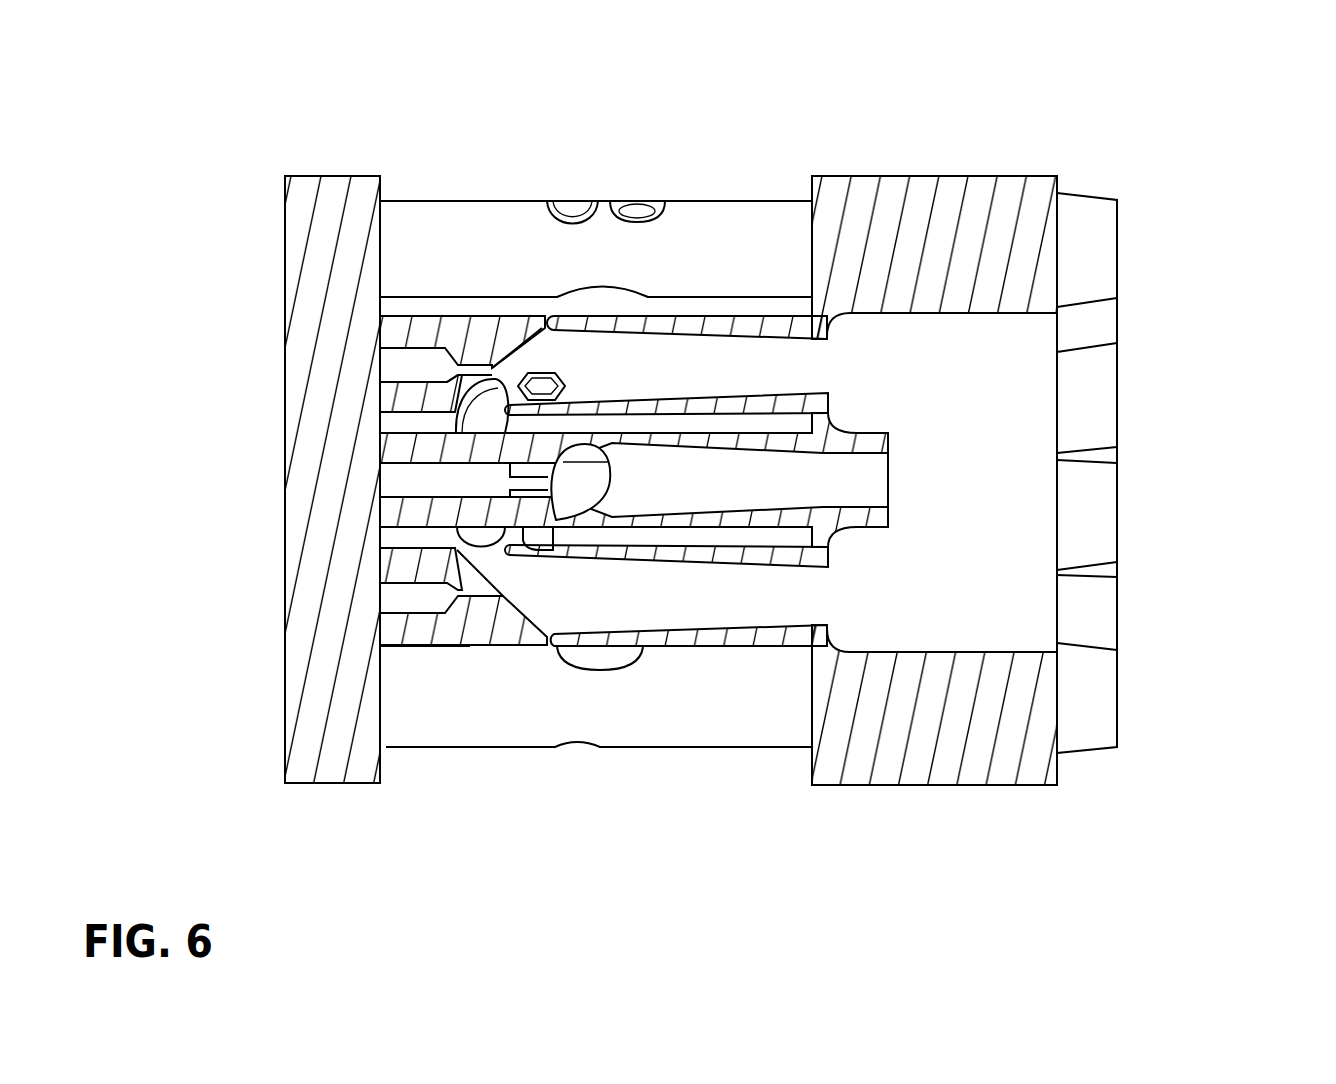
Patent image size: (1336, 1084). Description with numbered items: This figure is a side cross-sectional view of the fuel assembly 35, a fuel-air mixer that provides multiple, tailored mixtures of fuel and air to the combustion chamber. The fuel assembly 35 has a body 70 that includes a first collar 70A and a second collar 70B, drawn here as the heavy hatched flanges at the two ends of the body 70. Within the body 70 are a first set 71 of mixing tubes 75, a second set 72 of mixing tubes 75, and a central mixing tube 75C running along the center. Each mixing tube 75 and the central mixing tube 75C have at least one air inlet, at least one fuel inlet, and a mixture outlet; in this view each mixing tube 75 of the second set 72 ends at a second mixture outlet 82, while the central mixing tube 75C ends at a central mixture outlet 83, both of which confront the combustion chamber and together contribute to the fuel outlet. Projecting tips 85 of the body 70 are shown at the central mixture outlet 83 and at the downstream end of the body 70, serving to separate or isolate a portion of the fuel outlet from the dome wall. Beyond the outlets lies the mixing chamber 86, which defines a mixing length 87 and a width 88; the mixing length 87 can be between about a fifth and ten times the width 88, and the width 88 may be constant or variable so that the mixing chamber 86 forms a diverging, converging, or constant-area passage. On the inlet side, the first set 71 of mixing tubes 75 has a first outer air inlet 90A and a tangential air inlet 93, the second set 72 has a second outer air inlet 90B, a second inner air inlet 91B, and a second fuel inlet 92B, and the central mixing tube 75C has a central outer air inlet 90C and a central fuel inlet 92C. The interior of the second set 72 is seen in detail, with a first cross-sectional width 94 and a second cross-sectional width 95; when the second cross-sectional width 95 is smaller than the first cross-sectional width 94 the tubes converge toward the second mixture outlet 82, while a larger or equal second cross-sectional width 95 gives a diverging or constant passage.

The fuel assembly 35 is at (280, 117).
The body 70 is at (283, 205).
The first collar 70A is at (973, 190).
The second collar 70B is at (350, 190).
The first set of mixing tubes 71 is at (740, 715).
The second set of mixing tubes 72 is at (595, 598).
The mixing tube 75 is at (505, 700).
The central mixing tube 75C is at (772, 470).
The second mixture outlet 82 is at (821, 374).
The central mixture outlet 83 is at (888, 468).
The projecting tip 85 is at (862, 523).
The mixing chamber 86 is at (948, 368).
The mixing length 87 is at (835, 630).
The width 88 is at (1123, 313).
The first outer air inlet 90A is at (572, 213).
The second outer air inlet 90B is at (520, 348).
The central outer air inlet 90C is at (585, 475).
The second inner air inlet 91B is at (470, 406).
The second fuel inlet 92B is at (491, 368).
The central fuel inlet 92C is at (547, 483).
The tangential air inlet 93 is at (633, 210).
The first cross-sectional width 94 is at (670, 633).
The second cross-sectional width 95 is at (777, 627).